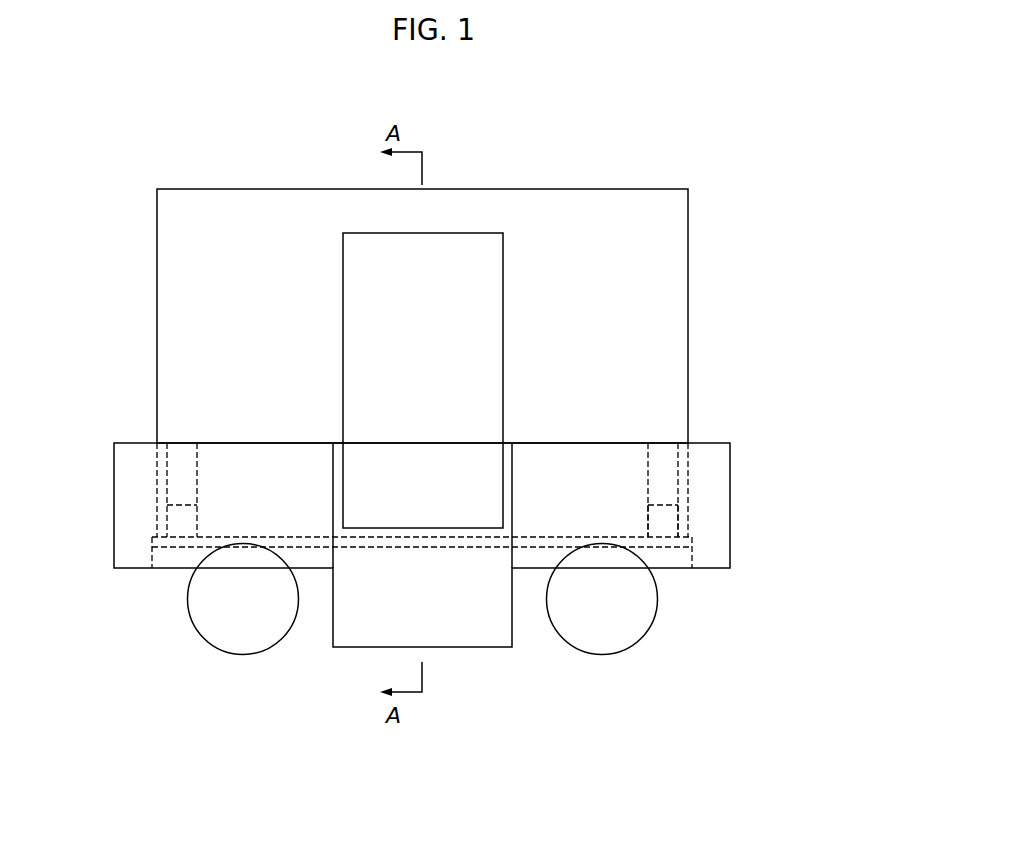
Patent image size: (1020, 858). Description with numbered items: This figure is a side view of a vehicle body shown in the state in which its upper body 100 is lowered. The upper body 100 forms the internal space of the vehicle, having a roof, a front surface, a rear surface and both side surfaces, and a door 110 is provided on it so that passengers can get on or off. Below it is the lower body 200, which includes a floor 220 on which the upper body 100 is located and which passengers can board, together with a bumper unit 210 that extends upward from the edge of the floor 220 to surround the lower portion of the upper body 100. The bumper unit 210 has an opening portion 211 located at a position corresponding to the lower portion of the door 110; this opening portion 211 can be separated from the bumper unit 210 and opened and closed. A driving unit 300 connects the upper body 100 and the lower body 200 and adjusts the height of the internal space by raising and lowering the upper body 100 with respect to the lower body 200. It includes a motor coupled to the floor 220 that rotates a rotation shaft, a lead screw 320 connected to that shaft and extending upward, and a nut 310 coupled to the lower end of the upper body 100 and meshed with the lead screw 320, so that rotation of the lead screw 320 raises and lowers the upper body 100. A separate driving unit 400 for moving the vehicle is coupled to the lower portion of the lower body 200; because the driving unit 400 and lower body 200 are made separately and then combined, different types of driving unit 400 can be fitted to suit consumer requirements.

The upper body 100 is at (313, 189).
The door 110 is at (434, 260).
The lower body 200 is at (112, 570).
The bumper unit 210 is at (259, 508).
The opening portion 211 is at (459, 630).
The floor 220 is at (675, 543).
The driving unit 300 is at (683, 478).
The nut 310 is at (673, 515).
The lead screw 320 is at (663, 456).
The driving unit 400 is at (664, 575).